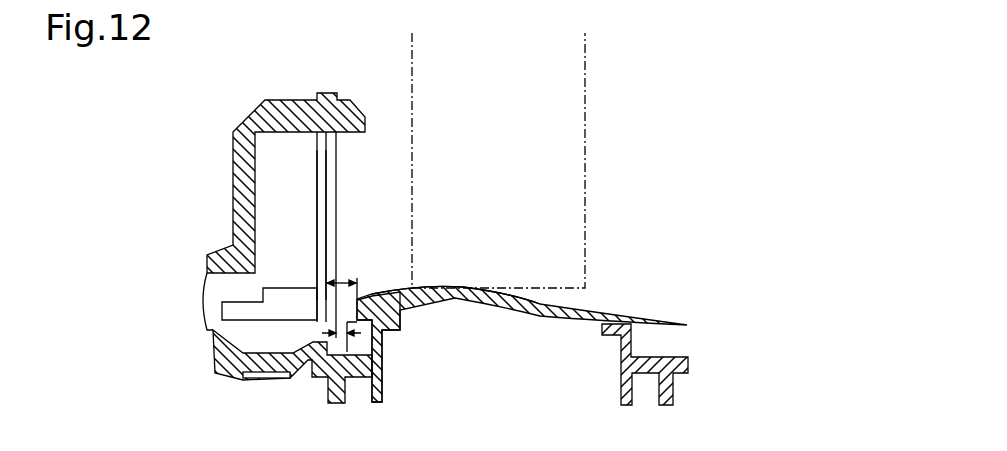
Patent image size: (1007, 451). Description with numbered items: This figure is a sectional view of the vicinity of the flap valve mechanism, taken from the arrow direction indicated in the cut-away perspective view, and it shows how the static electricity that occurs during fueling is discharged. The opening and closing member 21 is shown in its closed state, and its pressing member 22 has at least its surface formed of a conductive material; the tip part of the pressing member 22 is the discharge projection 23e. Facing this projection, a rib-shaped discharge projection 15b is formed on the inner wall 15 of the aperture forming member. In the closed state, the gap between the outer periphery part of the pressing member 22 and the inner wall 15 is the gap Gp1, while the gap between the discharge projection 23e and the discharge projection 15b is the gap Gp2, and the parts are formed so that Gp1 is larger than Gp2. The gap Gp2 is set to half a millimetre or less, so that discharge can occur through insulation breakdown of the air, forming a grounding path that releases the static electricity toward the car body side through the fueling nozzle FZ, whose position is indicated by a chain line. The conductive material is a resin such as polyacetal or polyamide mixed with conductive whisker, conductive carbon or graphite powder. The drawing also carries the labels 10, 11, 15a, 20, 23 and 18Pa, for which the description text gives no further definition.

The housing 10 is at (374, 106).
The housing body 11 is at (286, 190).
The inner wall 15 is at (338, 172).
The first rib portion 15a is at (320, 197).
The discharge projection 15b is at (328, 238).
The gap Gp1 is at (347, 281).
The gap Gp2 is at (341, 340).
The cover member 20 is at (456, 352).
The opening and closing member 21 is at (440, 287).
The pressing member 22 is at (522, 314).
The flange 23 is at (547, 303).
The discharge projection 23e is at (378, 329).
The pressure space 18Pa is at (548, 367).
The fueling nozzle FZ is at (585, 68).